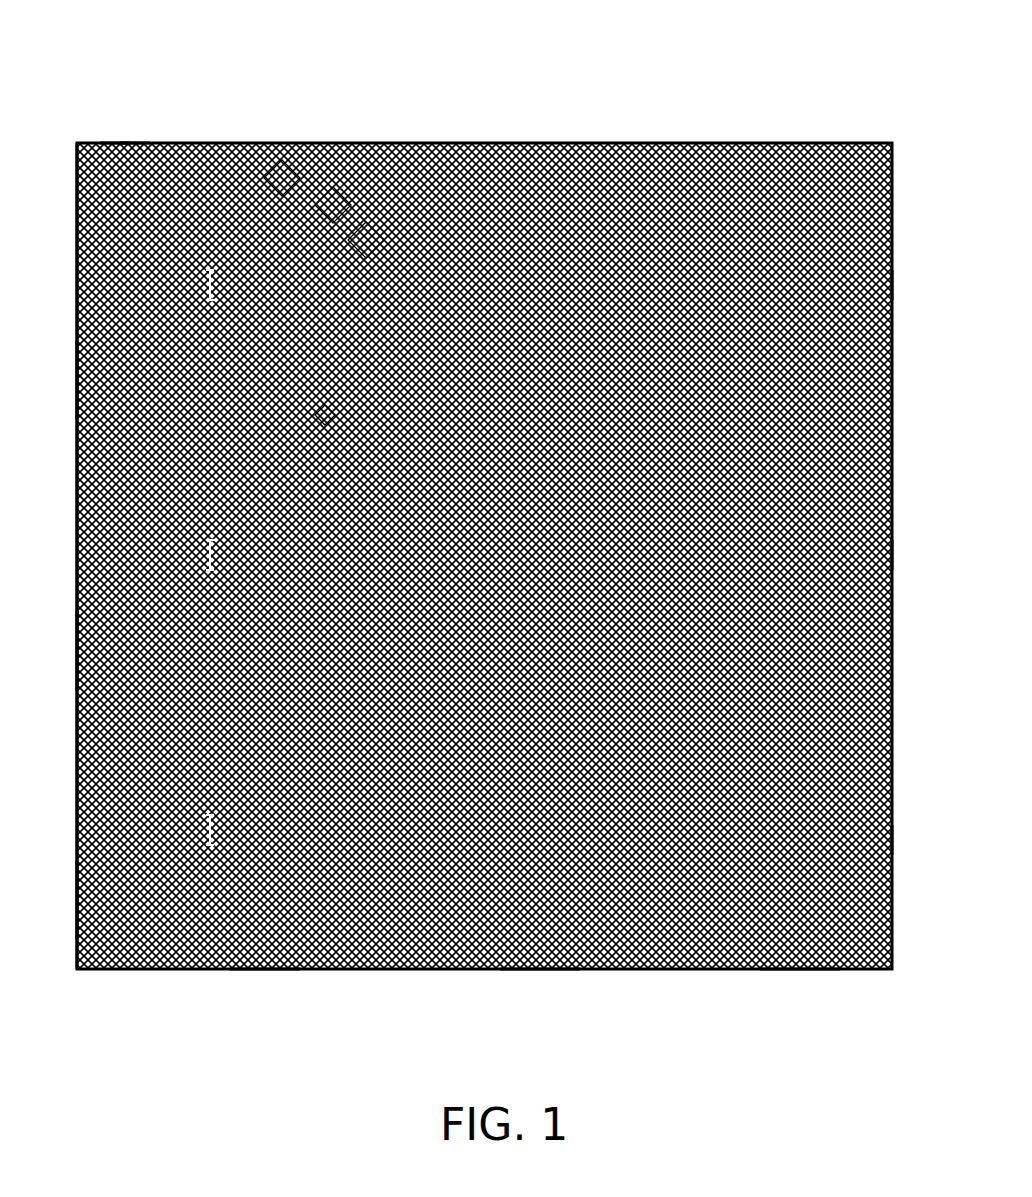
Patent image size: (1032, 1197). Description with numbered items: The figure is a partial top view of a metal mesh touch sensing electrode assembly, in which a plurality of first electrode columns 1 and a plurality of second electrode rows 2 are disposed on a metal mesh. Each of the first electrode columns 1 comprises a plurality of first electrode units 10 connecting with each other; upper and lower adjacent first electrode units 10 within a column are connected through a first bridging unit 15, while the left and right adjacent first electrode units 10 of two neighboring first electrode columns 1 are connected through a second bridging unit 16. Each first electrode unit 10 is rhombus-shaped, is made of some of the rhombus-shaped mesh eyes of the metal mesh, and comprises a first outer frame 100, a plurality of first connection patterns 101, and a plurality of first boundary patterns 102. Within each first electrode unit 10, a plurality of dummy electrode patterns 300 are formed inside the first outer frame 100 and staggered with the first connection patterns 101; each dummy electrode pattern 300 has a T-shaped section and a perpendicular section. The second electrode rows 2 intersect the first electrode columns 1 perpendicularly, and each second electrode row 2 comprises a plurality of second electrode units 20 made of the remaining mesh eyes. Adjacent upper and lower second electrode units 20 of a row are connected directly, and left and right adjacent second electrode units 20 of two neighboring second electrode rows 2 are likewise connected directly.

The first electrode column 1 is at (207, 136).
The second electrode row 2 is at (905, 283).
The first electrode unit 10 is at (98, 378).
The first bridging unit 15 is at (206, 283).
The second bridging unit 16 is at (323, 413).
The second electrode unit 20 is at (266, 902).
The first outer frame 100 is at (115, 143).
The first connection pattern 101 is at (135, 143).
The first boundary pattern 102 is at (77, 143).
The dummy electrode pattern 300 is at (180, 143).